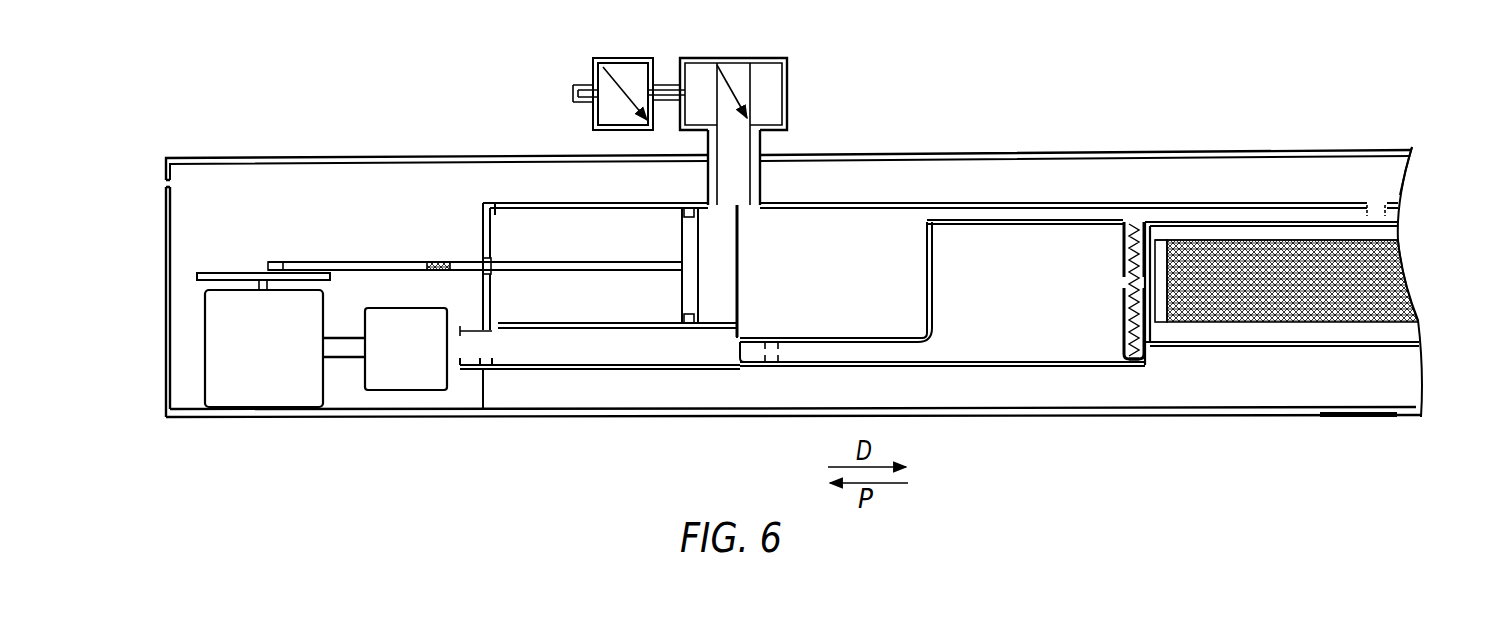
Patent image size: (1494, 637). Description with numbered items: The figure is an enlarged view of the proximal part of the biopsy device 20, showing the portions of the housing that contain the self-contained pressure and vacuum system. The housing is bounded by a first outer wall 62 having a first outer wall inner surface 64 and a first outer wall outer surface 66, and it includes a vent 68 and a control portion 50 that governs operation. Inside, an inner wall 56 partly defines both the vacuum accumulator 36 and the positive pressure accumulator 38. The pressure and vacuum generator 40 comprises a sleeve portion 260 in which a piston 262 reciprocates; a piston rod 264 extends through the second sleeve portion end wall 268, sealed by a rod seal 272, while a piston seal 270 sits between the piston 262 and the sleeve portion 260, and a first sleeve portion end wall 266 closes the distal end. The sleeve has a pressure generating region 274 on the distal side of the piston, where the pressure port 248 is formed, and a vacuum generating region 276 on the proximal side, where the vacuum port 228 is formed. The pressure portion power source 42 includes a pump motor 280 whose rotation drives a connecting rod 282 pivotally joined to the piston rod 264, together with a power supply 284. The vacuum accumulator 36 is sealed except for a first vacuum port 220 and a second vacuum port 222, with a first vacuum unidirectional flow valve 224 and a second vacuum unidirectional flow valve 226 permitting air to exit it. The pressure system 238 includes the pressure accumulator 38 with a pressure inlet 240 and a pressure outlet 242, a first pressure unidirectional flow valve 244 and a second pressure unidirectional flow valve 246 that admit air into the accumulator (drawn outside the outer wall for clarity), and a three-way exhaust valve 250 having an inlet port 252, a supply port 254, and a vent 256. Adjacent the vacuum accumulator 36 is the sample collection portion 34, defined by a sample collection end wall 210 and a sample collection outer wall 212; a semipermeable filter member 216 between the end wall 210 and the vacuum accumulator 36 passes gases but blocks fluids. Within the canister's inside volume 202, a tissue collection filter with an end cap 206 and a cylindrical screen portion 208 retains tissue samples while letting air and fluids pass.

The biopsy device 20 is at (1090, 428).
The sample collection portion 34 is at (1178, 231).
The vacuum accumulator 36 is at (1024, 295).
The positive pressure accumulator 38 is at (885, 292).
The pressure and vacuum generator 40 is at (602, 419).
The pressure portion power source 42 is at (312, 421).
The control portion 50 is at (1360, 420).
The inner wall 56 is at (870, 204).
The first outer wall 62 is at (968, 201).
The first outer wall inner surface 64 is at (241, 167).
The first outer wall outer surface 66 is at (333, 156).
The vent 68 is at (164, 182).
The inside volume 202 is at (1197, 317).
The end cap 206 is at (1134, 323).
The screen portion 208 is at (1282, 250).
The sample collection end wall 210 is at (1136, 228).
The sample collection outer wall 212 is at (1213, 220).
The filter member 216 is at (1138, 220).
The first vacuum port 220 is at (778, 345).
The second vacuum port 222 is at (1124, 282).
The first vacuum unidirectional flow valve 224 is at (766, 352).
The second vacuum unidirectional flow valve 226 is at (480, 364).
The vacuum port 228 is at (465, 360).
The pressure system 238 is at (747, 377).
The pressure inlet 240 is at (757, 207).
The pressure outlet 242 is at (945, 216).
The first pressure unidirectional flow valve 244 is at (735, 72).
The second pressure unidirectional flow valve 246 is at (618, 72).
The pressure port 248 is at (697, 215).
The exhaust valve 250 is at (1378, 192).
The inlet port 252 is at (1362, 210).
The supply port 254 is at (1393, 210).
The vent 256 is at (1381, 190).
The sleeve portion 260 is at (598, 205).
The piston 262 is at (685, 297).
The piston rod 264 is at (520, 240).
The first sleeve portion end wall 266 is at (740, 283).
The second sleeve portion end wall 268 is at (484, 219).
The piston seal 270 is at (688, 325).
The rod seal 272 is at (484, 258).
The pressure generating region 274 is at (714, 258).
The vacuum generating region 276 is at (503, 222).
The pump motor 280 is at (272, 393).
The connecting rod 282 is at (348, 266).
The power supply 284 is at (395, 322).